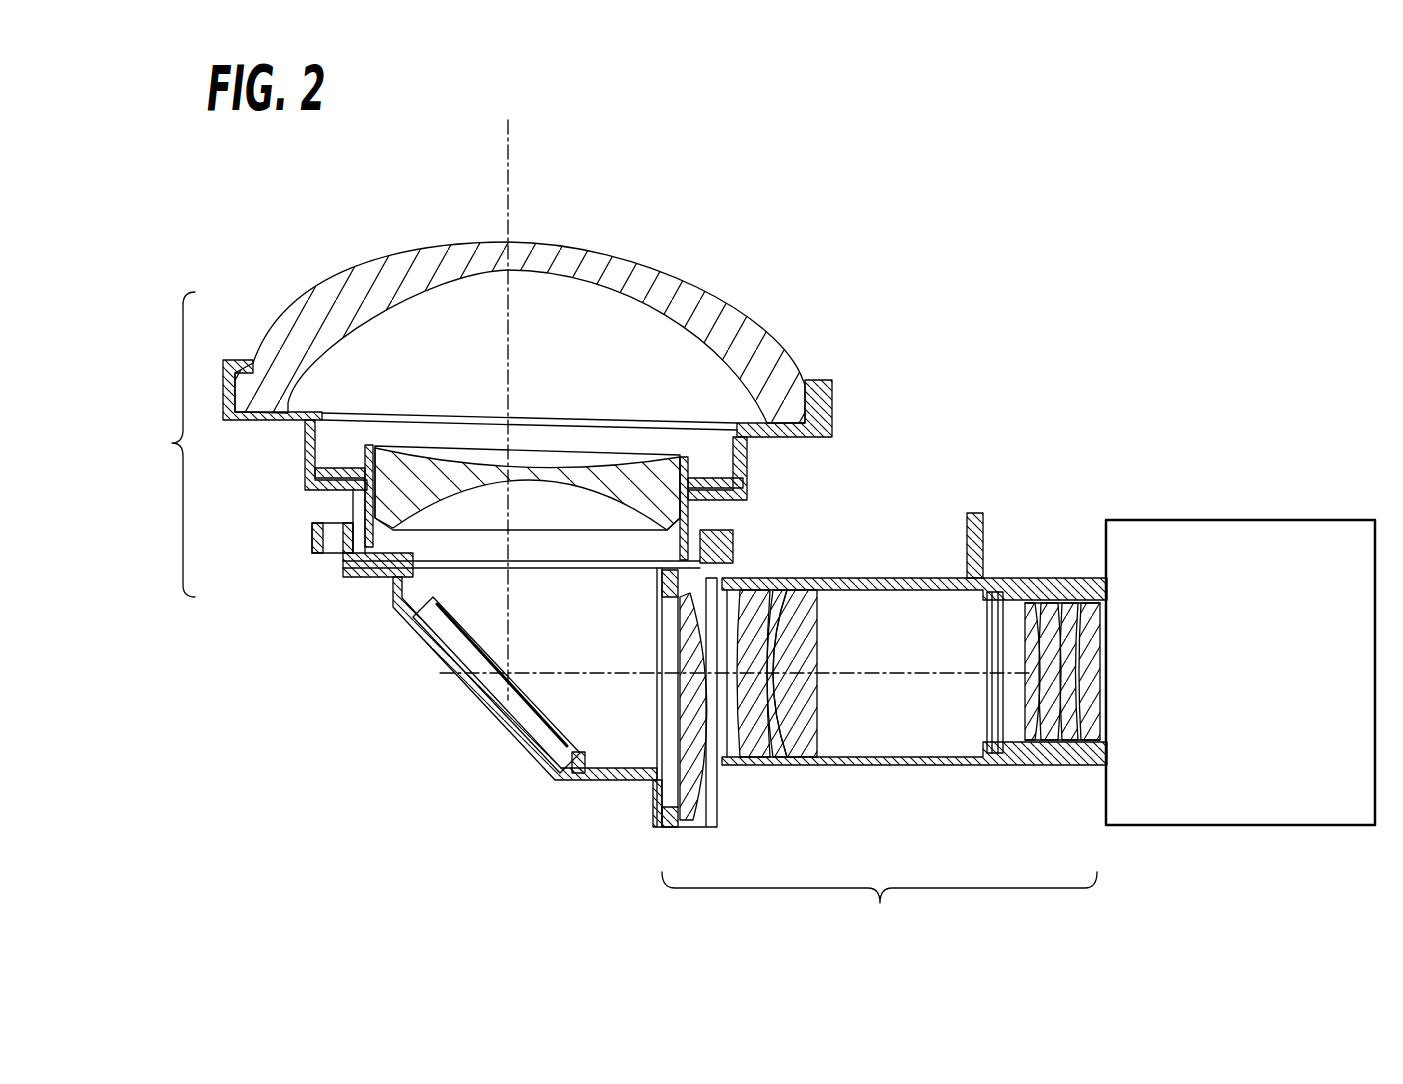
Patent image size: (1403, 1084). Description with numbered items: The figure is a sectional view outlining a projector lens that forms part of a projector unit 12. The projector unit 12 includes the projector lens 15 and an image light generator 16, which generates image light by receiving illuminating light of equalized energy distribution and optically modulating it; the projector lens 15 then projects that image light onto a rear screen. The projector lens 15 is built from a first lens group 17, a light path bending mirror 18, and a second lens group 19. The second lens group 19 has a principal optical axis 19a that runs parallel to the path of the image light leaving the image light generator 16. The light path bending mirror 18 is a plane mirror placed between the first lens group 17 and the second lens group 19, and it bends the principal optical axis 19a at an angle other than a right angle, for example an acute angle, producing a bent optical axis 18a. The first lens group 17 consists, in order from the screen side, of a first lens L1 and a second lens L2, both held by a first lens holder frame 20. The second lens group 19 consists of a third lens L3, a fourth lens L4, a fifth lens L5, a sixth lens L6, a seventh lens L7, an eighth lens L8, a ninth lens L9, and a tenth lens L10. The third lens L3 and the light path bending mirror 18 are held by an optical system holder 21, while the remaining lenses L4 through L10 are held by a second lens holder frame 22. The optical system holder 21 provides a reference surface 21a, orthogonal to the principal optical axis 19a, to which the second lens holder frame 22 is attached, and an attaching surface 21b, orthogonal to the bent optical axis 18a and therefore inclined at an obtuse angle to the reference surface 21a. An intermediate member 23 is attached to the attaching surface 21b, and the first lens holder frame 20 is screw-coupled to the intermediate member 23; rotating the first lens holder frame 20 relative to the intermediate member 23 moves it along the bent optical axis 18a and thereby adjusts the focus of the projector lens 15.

The projector unit 12 is at (758, 529).
The projector lens 15 is at (914, 572).
The image light generator 16 is at (1240, 517).
The first lens group 17 is at (487, 413).
The light path bending mirror 18 is at (473, 653).
The bent optical axis 18a is at (512, 330).
The second lens group 19 is at (774, 712).
The principal optical axis 19a is at (942, 675).
The first lens holder frame 20 is at (267, 430).
The optical system holder 21 is at (529, 660).
The reference surface 21a is at (717, 813).
The attaching surface 21b is at (627, 564).
The second lens holder frame 22 is at (900, 574).
The intermediate member 23 is at (307, 537).
The first lens L1 is at (707, 284).
The second lens L2 is at (637, 462).
The third lens L3 is at (690, 777).
The fourth lens L4 is at (748, 590).
The fifth lens L5 is at (793, 590).
The sixth lens L6 is at (818, 624).
The seventh lens L7 is at (1033, 765).
The eighth lens L8 is at (1042, 603).
The ninth lens L9 is at (1070, 765).
The tenth lens L10 is at (1085, 585).